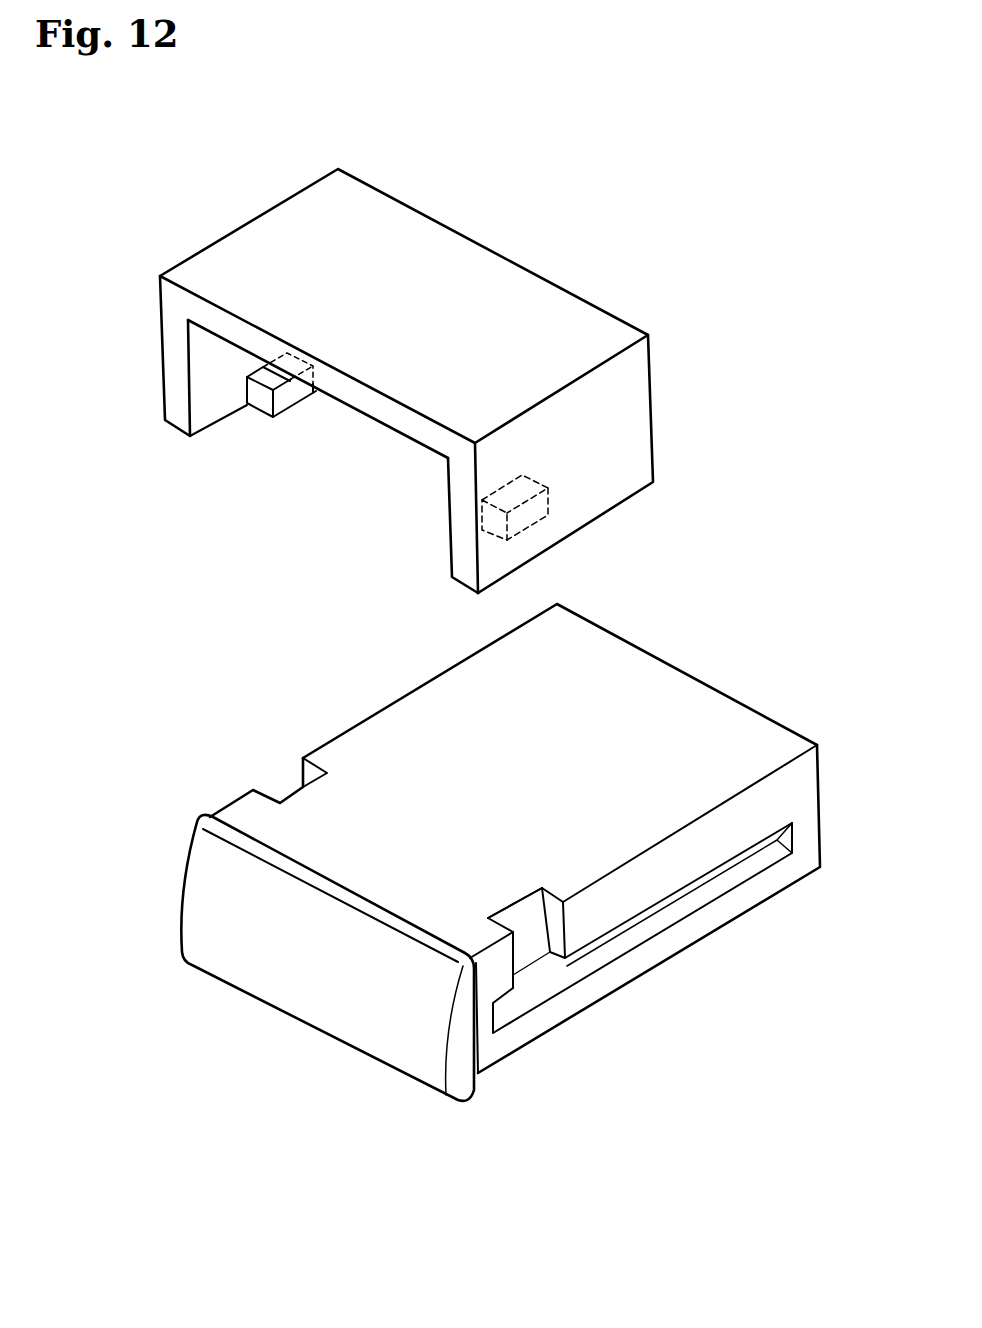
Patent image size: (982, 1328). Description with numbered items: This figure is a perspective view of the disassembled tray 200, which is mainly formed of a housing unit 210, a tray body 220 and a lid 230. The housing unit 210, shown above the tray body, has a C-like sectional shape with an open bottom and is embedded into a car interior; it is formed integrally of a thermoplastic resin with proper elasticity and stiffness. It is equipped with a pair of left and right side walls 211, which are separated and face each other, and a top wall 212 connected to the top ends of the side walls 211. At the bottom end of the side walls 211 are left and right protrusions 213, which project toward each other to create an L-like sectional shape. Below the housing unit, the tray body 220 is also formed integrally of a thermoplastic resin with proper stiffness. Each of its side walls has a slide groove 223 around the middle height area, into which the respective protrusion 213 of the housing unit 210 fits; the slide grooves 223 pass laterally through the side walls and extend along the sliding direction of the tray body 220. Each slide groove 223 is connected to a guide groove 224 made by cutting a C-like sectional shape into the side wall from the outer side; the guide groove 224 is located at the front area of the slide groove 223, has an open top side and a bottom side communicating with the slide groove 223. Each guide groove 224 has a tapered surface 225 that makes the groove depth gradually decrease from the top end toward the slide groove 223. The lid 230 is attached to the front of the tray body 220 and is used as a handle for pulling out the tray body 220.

The tray 200 is at (726, 181).
The housing unit 210 is at (219, 217).
The side walls 211 is at (175, 385).
The top wall 212 is at (372, 402).
The protrusions 213 is at (265, 396).
The tray body 220 is at (760, 683).
The slide groove 223 is at (738, 873).
The guide groove 224 is at (286, 782).
The tapered surface 225 is at (525, 918).
The lid 230 is at (358, 1018).